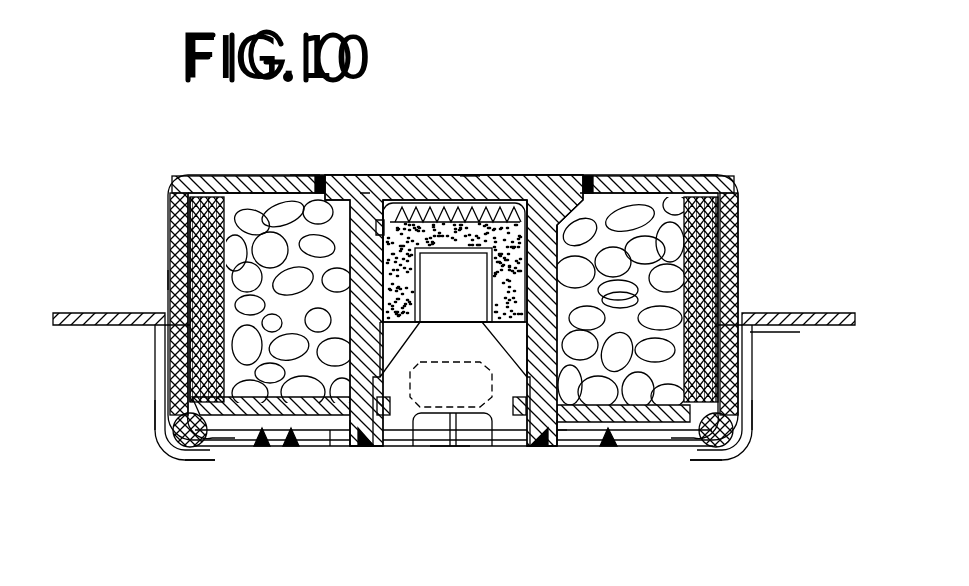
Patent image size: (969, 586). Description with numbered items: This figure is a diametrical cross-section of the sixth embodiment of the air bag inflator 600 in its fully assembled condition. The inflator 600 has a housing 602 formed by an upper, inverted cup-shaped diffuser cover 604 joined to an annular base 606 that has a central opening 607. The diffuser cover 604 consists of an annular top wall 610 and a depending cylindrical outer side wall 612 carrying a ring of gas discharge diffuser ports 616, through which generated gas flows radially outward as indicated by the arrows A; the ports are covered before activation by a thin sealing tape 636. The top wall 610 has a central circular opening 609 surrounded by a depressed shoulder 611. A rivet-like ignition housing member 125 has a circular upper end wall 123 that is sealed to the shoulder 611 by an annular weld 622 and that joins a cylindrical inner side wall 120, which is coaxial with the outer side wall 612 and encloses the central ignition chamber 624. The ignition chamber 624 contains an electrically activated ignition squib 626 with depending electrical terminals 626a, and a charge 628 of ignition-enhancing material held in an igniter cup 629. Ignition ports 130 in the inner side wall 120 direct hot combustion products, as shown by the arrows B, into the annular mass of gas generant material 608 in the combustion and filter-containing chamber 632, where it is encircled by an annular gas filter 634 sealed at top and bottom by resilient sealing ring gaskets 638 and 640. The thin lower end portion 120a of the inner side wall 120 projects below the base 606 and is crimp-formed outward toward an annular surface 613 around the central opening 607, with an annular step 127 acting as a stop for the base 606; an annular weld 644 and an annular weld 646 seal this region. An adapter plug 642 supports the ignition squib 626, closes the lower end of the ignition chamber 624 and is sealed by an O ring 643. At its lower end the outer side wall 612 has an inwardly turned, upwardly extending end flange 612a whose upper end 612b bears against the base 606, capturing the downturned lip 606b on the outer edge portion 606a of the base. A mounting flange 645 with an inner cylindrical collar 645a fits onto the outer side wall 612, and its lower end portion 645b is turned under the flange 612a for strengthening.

The air bag inflator 600 is at (478, 553).
The housing 602 is at (118, 278).
The diffuser cover 604 is at (745, 176).
The base 606 is at (262, 447).
The outer edge portion 606a is at (225, 447).
The downturned lip 606b is at (200, 452).
The central opening 607 is at (372, 447).
The gas generant material 608 is at (316, 323).
The circular opening 609 is at (372, 224).
The top wall 610 is at (268, 180).
The shoulder 611 is at (587, 200).
The outer side wall 612 is at (175, 300).
The end flange 612a is at (180, 445).
The upper end of upturned lip 612b is at (180, 420).
The annular surface 613 is at (330, 447).
The gas discharge diffuser ports 616 is at (205, 280).
The annular weld 622 is at (310, 178).
The ignition chamber 624 is at (470, 295).
The ignition squib 626 is at (448, 447).
The electrical terminals 626a is at (478, 447).
The charge of ignition-enhancing material 628 is at (424, 216).
The igniter cup 629 is at (405, 205).
The combustion and filter-containing chamber 632 is at (232, 175).
The gas filter 634 is at (165, 343).
The sealing tape 636 is at (195, 225).
The sealing ring gasket 638 is at (188, 195).
The sealing ring gasket 640 is at (165, 373).
The adapter plug 642 is at (500, 447).
The O ring 643 is at (522, 420).
The annular weld 644 is at (290, 447).
The mounting flange 645 is at (75, 326).
The inner cylindrical collar 645a is at (165, 403).
The lower end portion of mounting flange 645b is at (205, 460).
The annular weld 646 is at (386, 418).
The inner side wall 120 is at (378, 200).
The lower end portion of inner side wall 120a is at (350, 447).
The upper end wall 123 is at (500, 190).
The ignition housing member 125 is at (472, 172).
The annular step 127 is at (560, 447).
The ignition ports 130 is at (365, 192).
The arrows A is at (112, 258).
The arrows B is at (337, 268).